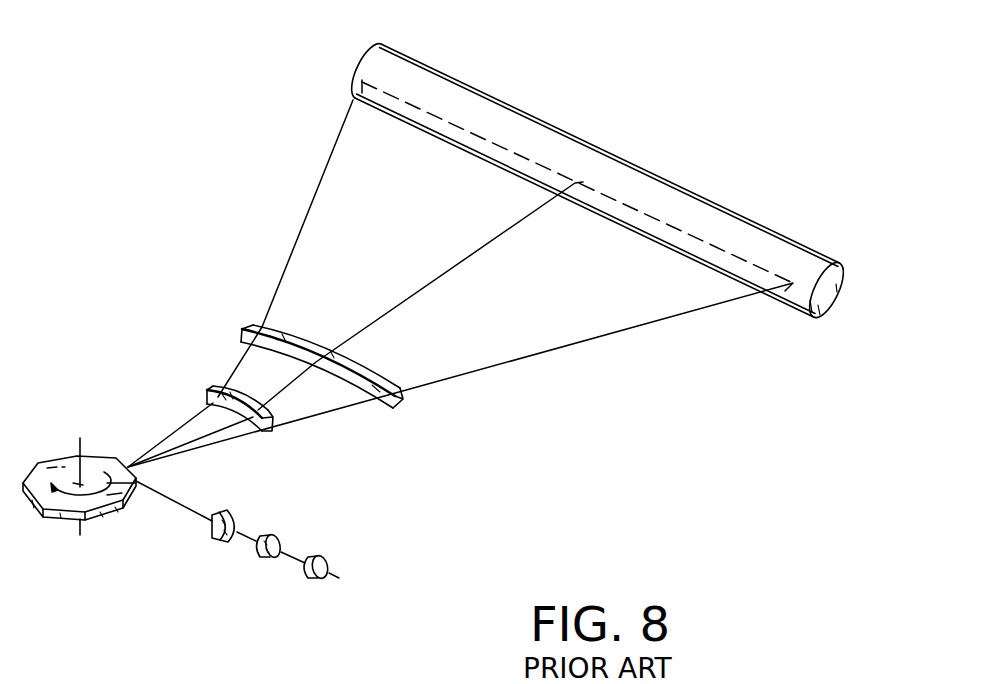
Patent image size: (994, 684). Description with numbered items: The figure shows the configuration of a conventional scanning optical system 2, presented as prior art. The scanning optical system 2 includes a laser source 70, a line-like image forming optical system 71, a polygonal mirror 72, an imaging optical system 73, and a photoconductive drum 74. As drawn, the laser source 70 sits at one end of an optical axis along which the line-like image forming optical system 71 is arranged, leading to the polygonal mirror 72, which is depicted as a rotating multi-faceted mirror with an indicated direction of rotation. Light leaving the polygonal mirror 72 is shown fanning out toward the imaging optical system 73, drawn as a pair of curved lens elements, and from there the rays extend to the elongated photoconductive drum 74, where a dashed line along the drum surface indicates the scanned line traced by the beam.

The scanning optical system 2 is at (144, 143).
The laser source 70 is at (313, 578).
The line-like image forming optical system 71 is at (217, 490).
The polygonal mirror 72 is at (62, 513).
The imaging optical system 73 is at (243, 292).
The photoconductive drum 74 is at (683, 198).